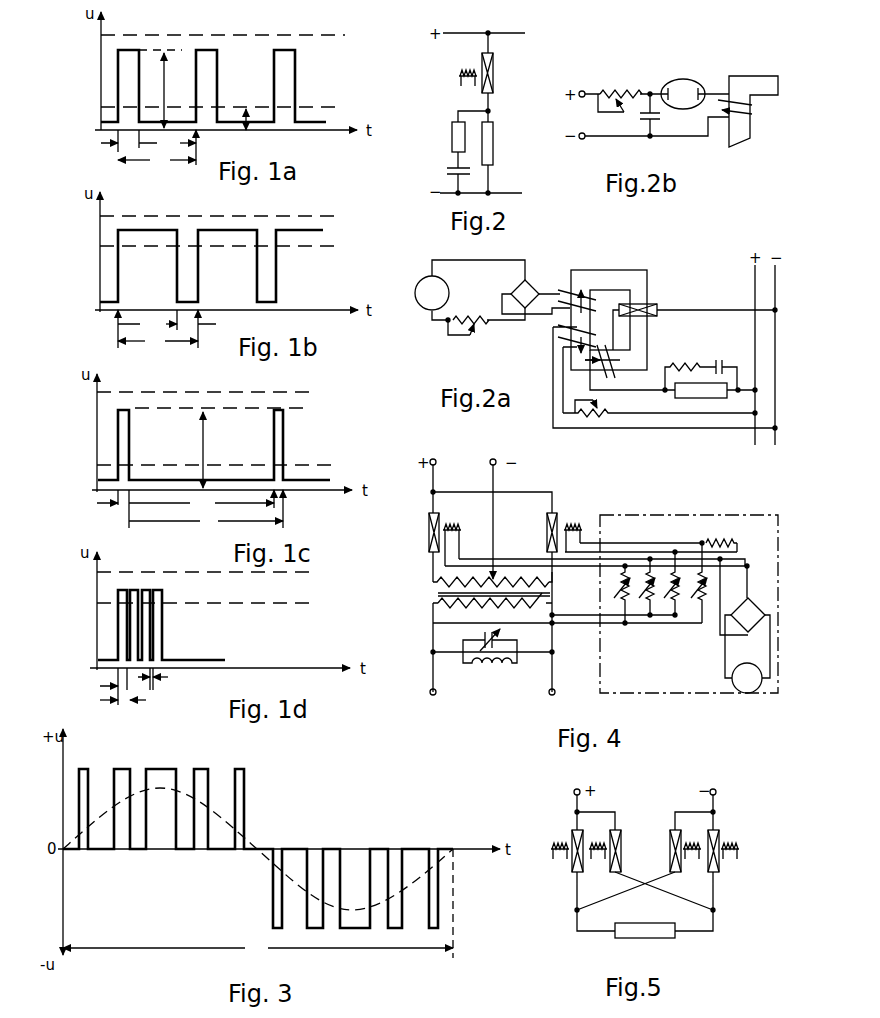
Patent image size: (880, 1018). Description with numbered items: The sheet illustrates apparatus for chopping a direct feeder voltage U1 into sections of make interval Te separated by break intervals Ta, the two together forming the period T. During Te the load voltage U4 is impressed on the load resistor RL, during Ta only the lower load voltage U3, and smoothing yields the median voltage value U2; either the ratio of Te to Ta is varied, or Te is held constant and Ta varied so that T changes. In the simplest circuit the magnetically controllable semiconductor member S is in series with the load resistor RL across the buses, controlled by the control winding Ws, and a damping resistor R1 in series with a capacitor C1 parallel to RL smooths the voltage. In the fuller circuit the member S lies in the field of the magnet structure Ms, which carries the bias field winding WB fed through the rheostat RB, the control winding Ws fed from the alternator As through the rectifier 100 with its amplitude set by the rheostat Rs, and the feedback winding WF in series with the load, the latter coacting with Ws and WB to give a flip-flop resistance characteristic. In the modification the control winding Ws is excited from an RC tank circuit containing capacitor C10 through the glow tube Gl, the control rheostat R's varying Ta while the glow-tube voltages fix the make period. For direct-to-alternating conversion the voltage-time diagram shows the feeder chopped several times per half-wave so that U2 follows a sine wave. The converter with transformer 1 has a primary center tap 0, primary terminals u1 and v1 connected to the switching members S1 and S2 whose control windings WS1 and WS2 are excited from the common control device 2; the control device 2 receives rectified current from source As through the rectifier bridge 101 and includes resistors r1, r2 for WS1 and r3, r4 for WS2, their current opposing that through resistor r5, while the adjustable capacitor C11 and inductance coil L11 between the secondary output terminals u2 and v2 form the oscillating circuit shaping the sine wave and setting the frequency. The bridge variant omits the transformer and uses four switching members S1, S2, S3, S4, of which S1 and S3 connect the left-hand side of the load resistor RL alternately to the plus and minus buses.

In FIG. 1A, the feeder voltage U1 is at (210, 35).
In FIG. 1B, the feeder voltage U1 is at (202, 216).
In FIG. 1C, the feeder voltage U1 is at (188, 380).
In FIG. 1D, the feeder voltage U1 is at (162, 572).
In FIG. 1A, the median voltage value U2 is at (300, 112).
In FIG. 1B, the median voltage value U2 is at (167, 247).
In FIG. 1C, the median voltage value U2 is at (291, 470).
In FIG. 1D, the median voltage value U2 is at (195, 605).
In FIG. 3, the median voltage value U2 is at (222, 822).
In FIG. 1A, the lower load voltage U3 is at (246, 131).
In FIG. 1A, the load voltage during make interval U4 is at (166, 90).
In FIG. 1C, the load voltage during make interval U4 is at (205, 450).
In FIG. 1A, the make interval Te is at (120, 141).
In FIG. 1B, the make interval Te is at (147, 329).
In FIG. 1C, the make interval Te is at (124, 505).
In FIG. 1D, the make interval Te is at (118, 692).
In FIG. 1A, the break interval Ta is at (167, 147).
In FIG. 1B, the break interval Ta is at (197, 329).
In FIG. 1C, the break interval Ta is at (201, 501).
In FIG. 1D, the break interval Ta is at (153, 680).
In FIG. 1A, the period T is at (157, 160).
In FIG. 1B, the period T is at (158, 341).
In FIG. 1C, the period T is at (206, 510).
In FIG. 1D, the period T is at (123, 703).
In FIG. 3, the period T is at (258, 948).
In FIG. 2, the magnetically controllable semiconductor member S is at (494, 70).
In FIG. 2A, the magnetically controllable semiconductor member S is at (649, 316).
In FIG. 2, the control winding Ws is at (461, 69).
In FIG. 2B, the control winding Ws is at (750, 110).
In FIG. 2A, the control winding Ws is at (566, 292).
In FIG. 2, the damping resistor R1 is at (452, 136).
In FIG. 2A, the damping resistor R1 is at (684, 363).
In FIG. 2, the load resistor RL is at (493, 137).
In FIG. 2A, the load resistor RL is at (669, 393).
In FIG. 5, the load resistor RL is at (636, 928).
In FIG. 2, the capacitor C1 is at (447, 171).
In FIG. 2A, the capacitor C1 is at (720, 360).
In FIG. 2B, the control rheostat R's is at (625, 87).
In FIG. 2B, the tank circuit capacitor C10 is at (653, 120).
In FIG. 2B, the glow tube Gl is at (685, 83).
In FIG. 2B, the magnet structure Ms is at (758, 82).
In FIG. 2A, the magnet structure Ms is at (643, 289).
In FIG. 2A, the alternator As is at (421, 287).
In FIG. 4, the alternator As is at (732, 679).
In FIG. 2A, the rectifier 100 is at (519, 285).
In FIG. 2A, the rheostat Rs is at (483, 324).
In FIG. 2A, the bias field winding WB is at (570, 340).
In FIG. 2A, the feedback winding WF is at (611, 372).
In FIG. 2A, the rheostat RB is at (603, 415).
In FIG. 4, the primary center tap 0 is at (495, 570).
In FIG. 4, the controllable semiconductor member S1 is at (428, 531).
In FIG. 5, the controllable semiconductor member S1 is at (572, 866).
In FIG. 4, the control winding WS1 is at (458, 523).
In FIG. 4, the controllable semiconductor member S2 is at (547, 532).
In FIG. 5, the controllable semiconductor member S2 is at (611, 866).
In FIG. 4, the control winding WS2 is at (575, 523).
In FIG. 5, the switching member S3 is at (680, 866).
In FIG. 5, the switching member S4 is at (719, 866).
In FIG. 4, the primary terminal u1 is at (482, 586).
In FIG. 4, the primary terminal v1 is at (560, 585).
In FIG. 4, the secondary output terminal u2 is at (436, 705).
In FIG. 4, the secondary output terminal v2 is at (554, 705).
In FIG. 4, the transformer 1 is at (441, 596).
In FIG. 4, the control device 2 is at (682, 516).
In FIG. 4, the resistor r1 is at (617, 594).
In FIG. 4, the resistor r2 is at (643, 587).
In FIG. 4, the resistor r3 is at (668, 583).
In FIG. 4, the resistor r4 is at (695, 583).
In FIG. 4, the resistor r5 is at (720, 536).
In FIG. 4, the rectifier bridge 101 is at (757, 605).
In FIG. 4, the adjustable capacitor C11 is at (480, 639).
In FIG. 4, the inductance coil L11 is at (501, 670).